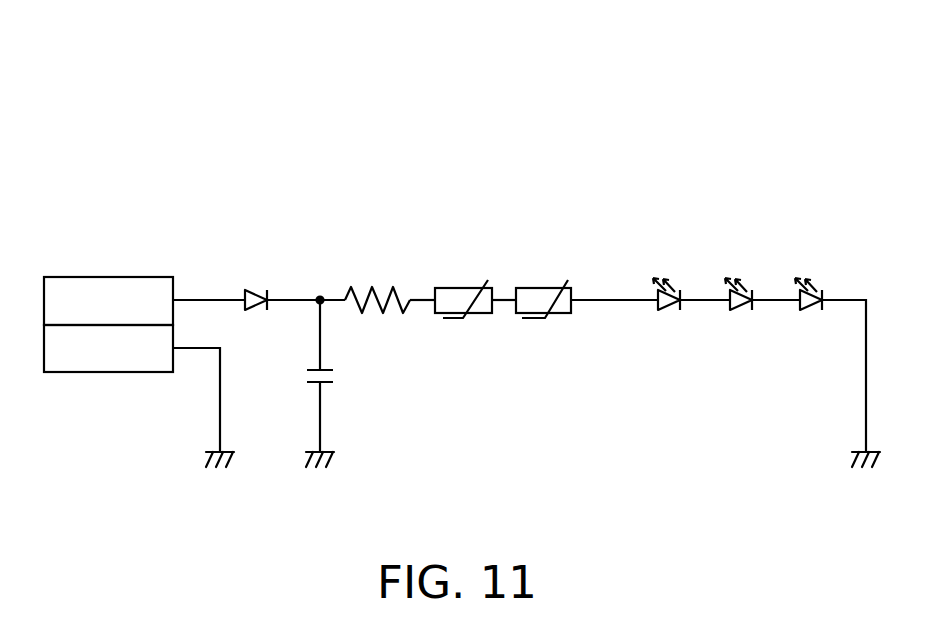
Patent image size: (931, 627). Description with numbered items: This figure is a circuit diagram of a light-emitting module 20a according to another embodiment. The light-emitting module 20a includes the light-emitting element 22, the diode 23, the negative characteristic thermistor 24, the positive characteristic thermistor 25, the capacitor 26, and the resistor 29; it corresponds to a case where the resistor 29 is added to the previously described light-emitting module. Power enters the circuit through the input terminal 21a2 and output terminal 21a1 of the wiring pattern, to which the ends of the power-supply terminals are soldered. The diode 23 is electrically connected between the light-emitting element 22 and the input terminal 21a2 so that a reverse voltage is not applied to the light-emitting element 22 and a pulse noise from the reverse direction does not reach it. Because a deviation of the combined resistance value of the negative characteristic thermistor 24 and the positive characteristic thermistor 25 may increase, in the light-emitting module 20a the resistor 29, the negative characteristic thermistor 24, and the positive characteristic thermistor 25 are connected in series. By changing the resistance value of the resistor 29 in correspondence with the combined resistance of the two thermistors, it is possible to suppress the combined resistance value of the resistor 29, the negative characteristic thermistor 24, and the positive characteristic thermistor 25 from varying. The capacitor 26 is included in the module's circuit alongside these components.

The light-emitting module 20a is at (773, 119).
The output terminal 21a1 is at (110, 375).
The input terminal 21a2 is at (112, 277).
The light-emitting element 22 is at (668, 311).
The diode 23 is at (258, 290).
The negative characteristic thermistor 24 is at (455, 288).
The positive characteristic thermistor 25 is at (535, 288).
The capacitor 26 is at (330, 383).
The resistor 29 is at (350, 290).